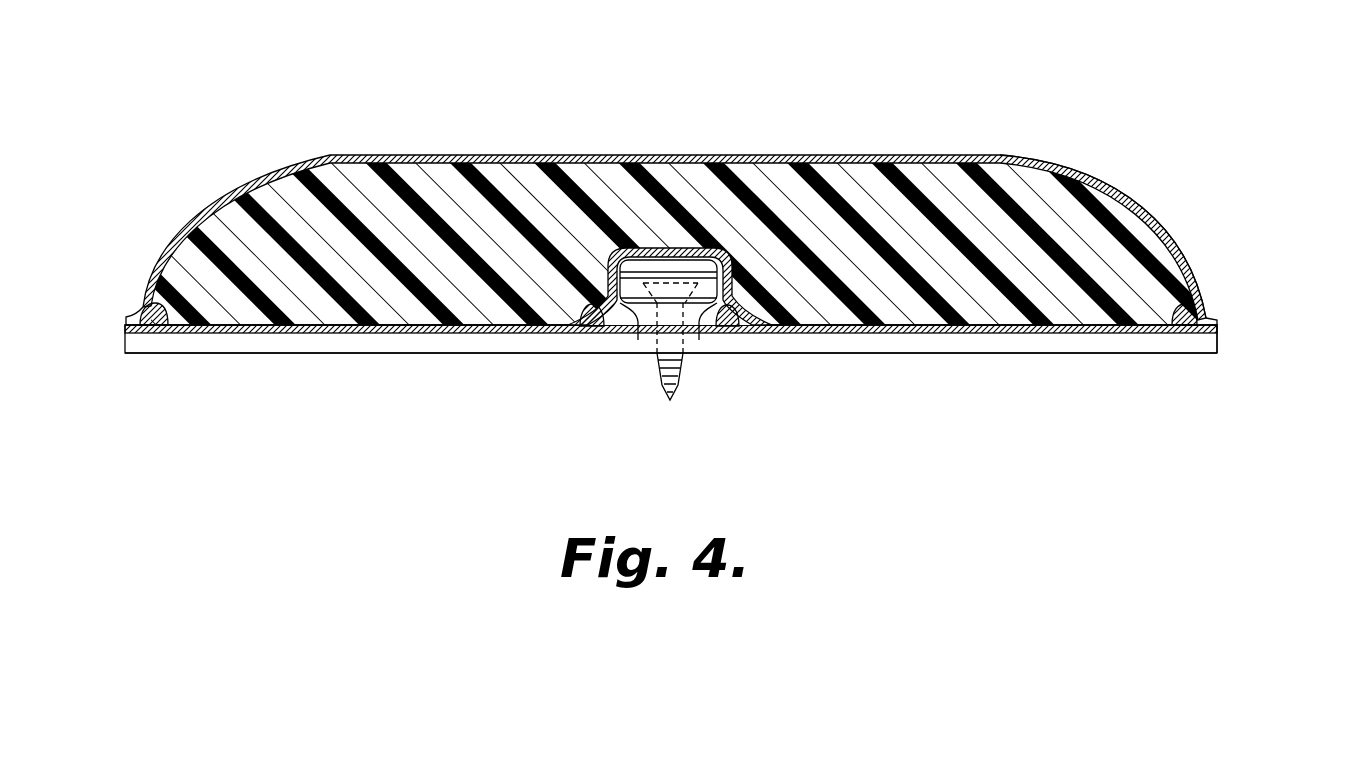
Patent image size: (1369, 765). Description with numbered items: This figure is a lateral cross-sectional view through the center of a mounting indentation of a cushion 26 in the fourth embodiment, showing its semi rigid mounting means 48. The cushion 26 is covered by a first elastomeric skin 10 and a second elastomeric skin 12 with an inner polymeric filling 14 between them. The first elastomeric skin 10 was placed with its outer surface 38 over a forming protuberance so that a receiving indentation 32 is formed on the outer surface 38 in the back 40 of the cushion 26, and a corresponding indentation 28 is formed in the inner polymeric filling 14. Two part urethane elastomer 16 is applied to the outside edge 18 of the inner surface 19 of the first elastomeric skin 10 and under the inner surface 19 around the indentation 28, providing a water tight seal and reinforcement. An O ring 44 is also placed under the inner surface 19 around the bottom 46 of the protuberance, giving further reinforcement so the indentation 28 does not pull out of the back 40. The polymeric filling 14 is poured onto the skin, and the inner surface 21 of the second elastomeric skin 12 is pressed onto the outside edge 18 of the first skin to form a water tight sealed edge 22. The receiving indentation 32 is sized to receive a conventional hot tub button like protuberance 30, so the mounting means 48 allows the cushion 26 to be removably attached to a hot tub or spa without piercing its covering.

The first elastomeric skin 10 is at (1010, 337).
The second elastomeric skin 12 is at (410, 155).
The inner polymeric filling 14 is at (1097, 197).
The two part urethane elastomer 16 is at (1197, 305).
The outside edge of the inner surface 18 is at (1215, 338).
The inner surface of the first elastomeric skin 19 is at (1135, 337).
The inner surface of the second elastomeric skin 21 is at (497, 162).
The sealed edge 22 is at (1222, 321).
The cushion 26 is at (880, 130).
The indentation 28 is at (598, 307).
The button like protuberance 30 is at (656, 314).
The receiving indentation 32 is at (698, 323).
The outer surface of the first elastomeric skin 38 is at (347, 340).
The back of the cushion 40 is at (220, 340).
The O ring 44 is at (727, 310).
The bottom of the protuberance 46 is at (710, 322).
The mounting means 48 is at (645, 390).